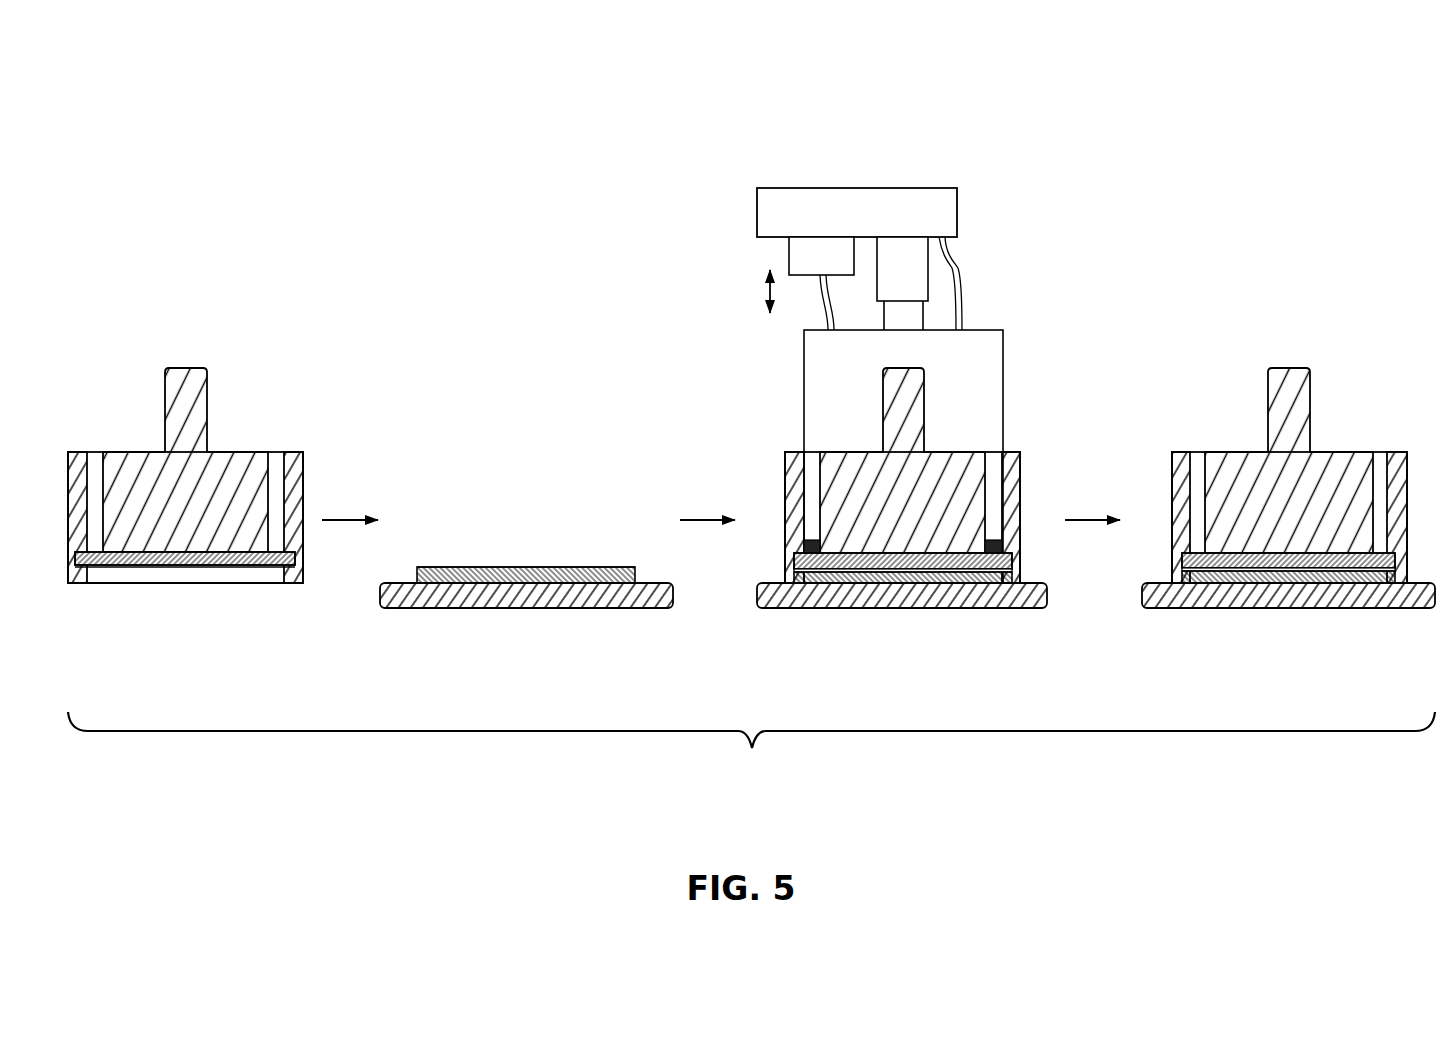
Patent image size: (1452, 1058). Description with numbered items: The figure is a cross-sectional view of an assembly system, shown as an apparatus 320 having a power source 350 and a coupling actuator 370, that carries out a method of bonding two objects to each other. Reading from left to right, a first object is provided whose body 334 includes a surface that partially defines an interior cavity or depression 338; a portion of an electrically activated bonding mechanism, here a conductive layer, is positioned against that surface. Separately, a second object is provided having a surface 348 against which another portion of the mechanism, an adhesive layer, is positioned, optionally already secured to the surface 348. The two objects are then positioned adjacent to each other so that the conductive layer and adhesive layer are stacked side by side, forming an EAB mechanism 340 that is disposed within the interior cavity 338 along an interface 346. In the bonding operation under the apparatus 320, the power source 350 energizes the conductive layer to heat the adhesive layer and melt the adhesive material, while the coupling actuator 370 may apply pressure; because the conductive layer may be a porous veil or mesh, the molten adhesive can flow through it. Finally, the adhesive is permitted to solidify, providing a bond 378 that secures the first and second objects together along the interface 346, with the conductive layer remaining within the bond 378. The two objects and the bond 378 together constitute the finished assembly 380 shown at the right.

The apparatus 320 is at (992, 148).
The body 334 is at (139, 450).
The interior cavity 338 is at (207, 587).
The EAB mechanism 340 is at (900, 594).
The interface 346 is at (1018, 560).
The surface 348 is at (467, 578).
The power source 350 is at (824, 233).
The coupling actuator 370 is at (912, 186).
The bond 378 is at (1250, 580).
The assembly 380 is at (1247, 345).